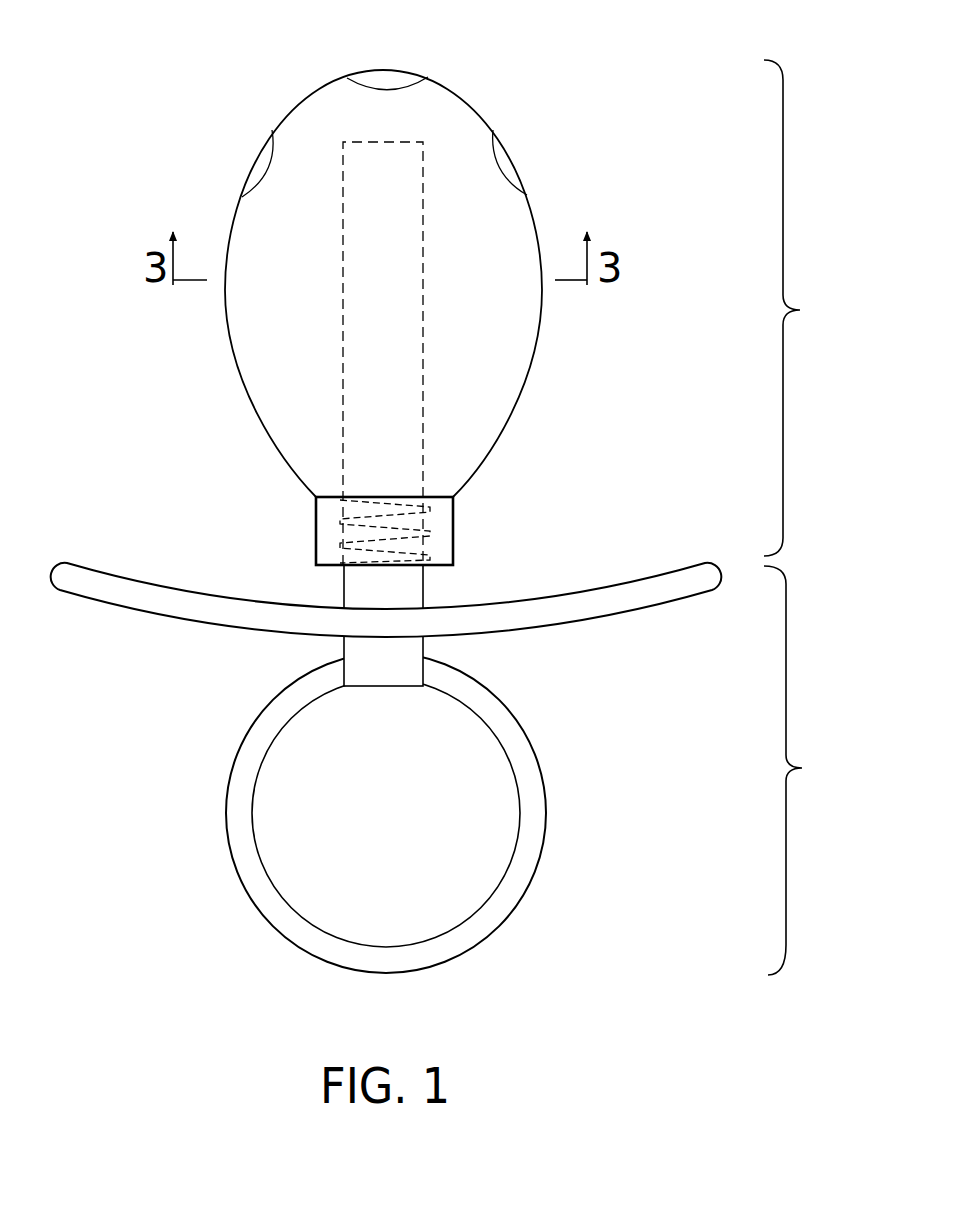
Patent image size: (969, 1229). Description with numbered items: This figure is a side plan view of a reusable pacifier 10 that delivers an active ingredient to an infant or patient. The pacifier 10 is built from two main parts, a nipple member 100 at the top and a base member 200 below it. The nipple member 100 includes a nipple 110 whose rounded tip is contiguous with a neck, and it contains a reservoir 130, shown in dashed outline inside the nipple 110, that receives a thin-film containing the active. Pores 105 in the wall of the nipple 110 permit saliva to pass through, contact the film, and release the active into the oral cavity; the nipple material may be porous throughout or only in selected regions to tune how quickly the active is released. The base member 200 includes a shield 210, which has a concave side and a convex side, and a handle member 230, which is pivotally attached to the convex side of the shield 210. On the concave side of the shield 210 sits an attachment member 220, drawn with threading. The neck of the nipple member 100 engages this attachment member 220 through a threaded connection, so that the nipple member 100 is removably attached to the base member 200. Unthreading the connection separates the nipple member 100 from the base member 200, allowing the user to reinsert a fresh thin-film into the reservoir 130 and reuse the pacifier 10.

The pacifier 10 is at (239, 52).
The nipple member 100 is at (812, 308).
The pores 105 is at (503, 160).
The nipple 110 is at (232, 360).
The reservoir 130 is at (422, 323).
The base member 200 is at (812, 770).
The shield 210 is at (123, 607).
The attachment member 220 is at (342, 522).
The handle member 230 is at (530, 900).